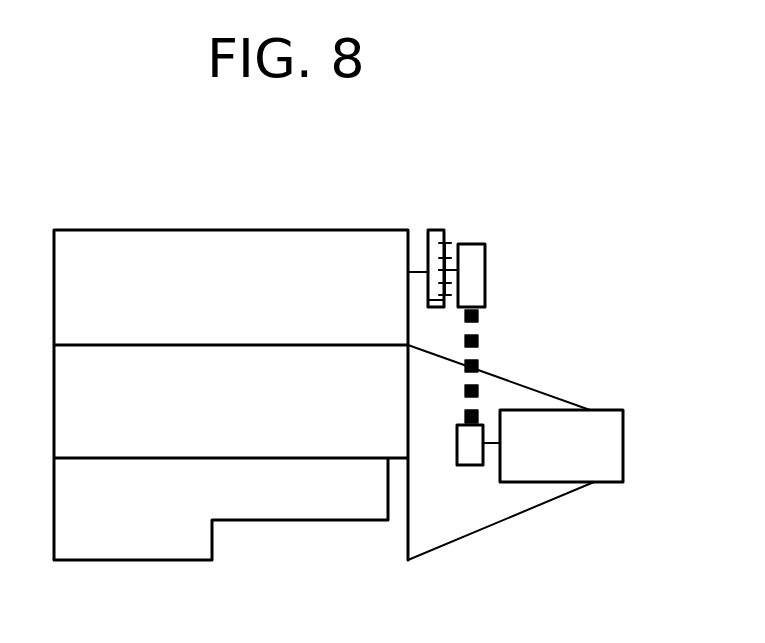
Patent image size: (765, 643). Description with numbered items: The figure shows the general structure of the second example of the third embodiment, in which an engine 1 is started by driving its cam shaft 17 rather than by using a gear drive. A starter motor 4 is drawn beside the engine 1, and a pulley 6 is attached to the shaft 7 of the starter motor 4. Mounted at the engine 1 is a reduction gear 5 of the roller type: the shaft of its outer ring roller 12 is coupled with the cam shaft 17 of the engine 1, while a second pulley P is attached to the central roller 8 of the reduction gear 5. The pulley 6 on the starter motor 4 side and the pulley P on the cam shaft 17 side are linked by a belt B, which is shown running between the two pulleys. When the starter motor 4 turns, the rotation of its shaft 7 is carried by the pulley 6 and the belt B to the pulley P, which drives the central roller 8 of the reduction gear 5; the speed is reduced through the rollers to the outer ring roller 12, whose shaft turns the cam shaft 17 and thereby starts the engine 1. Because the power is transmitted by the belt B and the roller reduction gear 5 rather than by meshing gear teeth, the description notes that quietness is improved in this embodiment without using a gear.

The engine 1 is at (230, 230).
The cam shaft 17 is at (422, 271).
The reduction gear 5 is at (443, 229).
The pulley P is at (482, 244).
The central roller 8 is at (450, 270).
The outer ring roller 12 is at (433, 307).
The belt B is at (478, 365).
The pulley 6 is at (455, 452).
The shaft 7 is at (492, 447).
The starter motor 4 is at (603, 473).